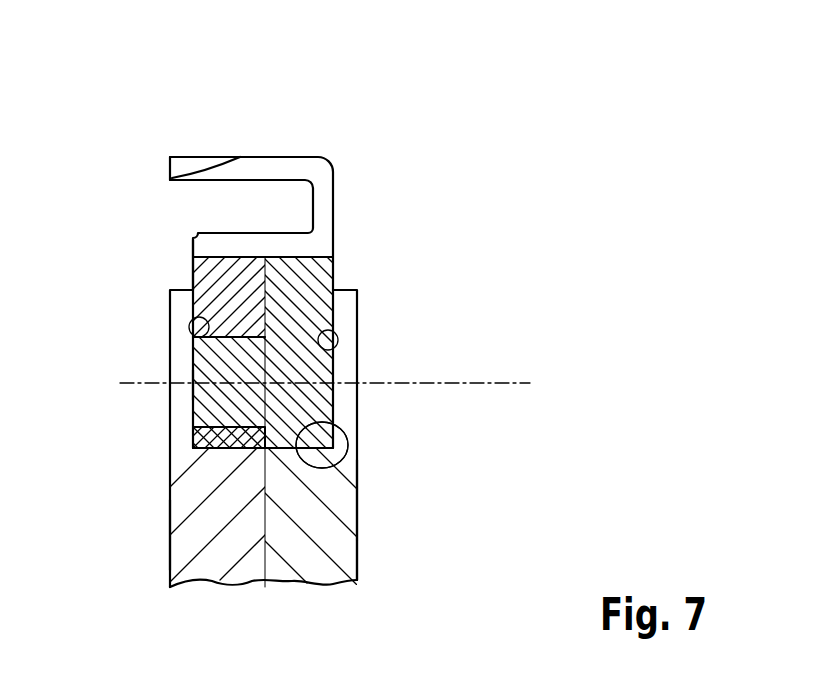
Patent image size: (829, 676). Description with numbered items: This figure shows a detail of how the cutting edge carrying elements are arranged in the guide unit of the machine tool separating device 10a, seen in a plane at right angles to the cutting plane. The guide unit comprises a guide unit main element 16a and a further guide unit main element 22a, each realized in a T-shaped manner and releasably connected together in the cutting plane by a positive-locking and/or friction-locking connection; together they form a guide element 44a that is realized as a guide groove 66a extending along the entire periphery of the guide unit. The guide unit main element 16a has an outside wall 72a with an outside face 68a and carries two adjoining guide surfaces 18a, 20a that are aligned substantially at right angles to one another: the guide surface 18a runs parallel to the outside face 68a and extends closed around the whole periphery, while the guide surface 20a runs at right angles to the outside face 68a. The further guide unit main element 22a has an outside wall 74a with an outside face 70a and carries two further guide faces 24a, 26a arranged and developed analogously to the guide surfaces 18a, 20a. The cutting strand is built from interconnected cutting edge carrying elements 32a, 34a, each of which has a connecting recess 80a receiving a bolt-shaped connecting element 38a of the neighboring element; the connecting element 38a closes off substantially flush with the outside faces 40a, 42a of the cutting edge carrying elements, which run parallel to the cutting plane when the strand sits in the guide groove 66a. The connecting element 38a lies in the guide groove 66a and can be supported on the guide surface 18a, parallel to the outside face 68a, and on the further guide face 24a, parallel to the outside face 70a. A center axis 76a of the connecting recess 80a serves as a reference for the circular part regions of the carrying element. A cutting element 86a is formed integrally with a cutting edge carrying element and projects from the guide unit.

The machine tool separating device 10a is at (455, 80).
The cutting element 86a is at (305, 157).
The outside face 42a is at (181, 272).
The cutting edge carrying element 32a is at (215, 285).
The cutting edge carrying element 34a is at (330, 270).
The outside face 40a is at (348, 310).
The further guide face 24a is at (205, 347).
The guide surface 18a is at (347, 354).
The connecting element 38a is at (195, 388).
The center axis 76a is at (517, 380).
The further guide face 26a is at (205, 428).
The guide surface 20a is at (340, 426).
The guide element 44a is at (333, 463).
The guide groove 66a is at (322, 445).
The connecting recess 80a is at (172, 440).
The outside wall 74a is at (172, 470).
The outside face 70a is at (158, 544).
The further guide unit main element 22a is at (207, 560).
The outside face 68a is at (370, 504).
The guide unit main element 16a is at (352, 535).
The outside wall 72a is at (357, 547).